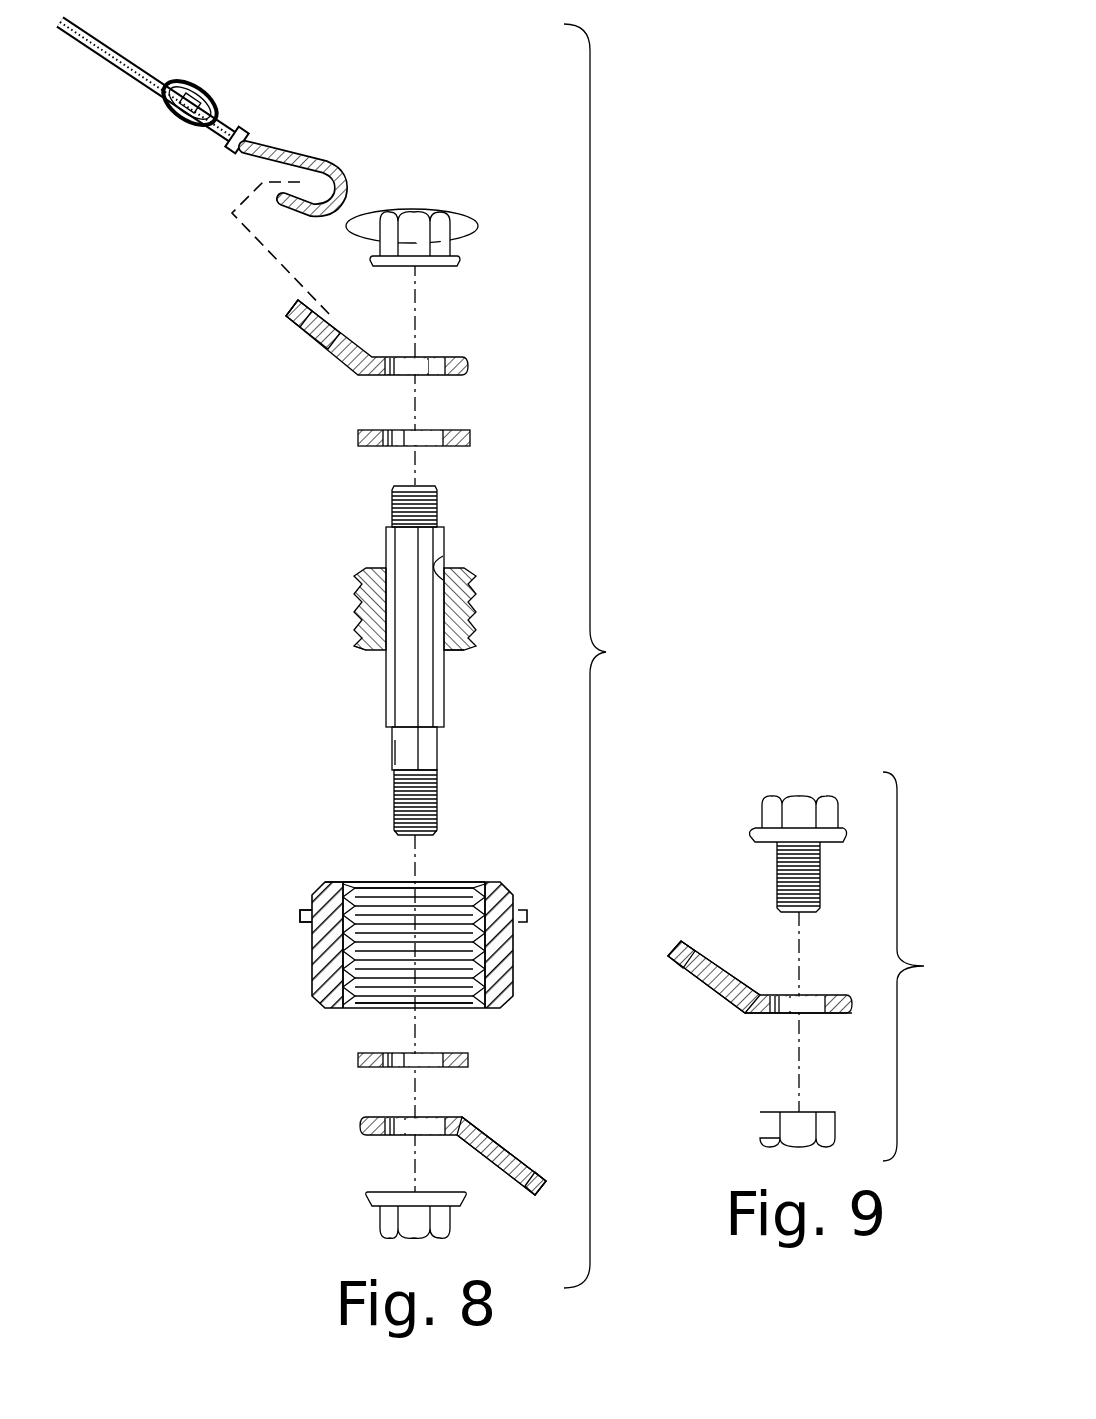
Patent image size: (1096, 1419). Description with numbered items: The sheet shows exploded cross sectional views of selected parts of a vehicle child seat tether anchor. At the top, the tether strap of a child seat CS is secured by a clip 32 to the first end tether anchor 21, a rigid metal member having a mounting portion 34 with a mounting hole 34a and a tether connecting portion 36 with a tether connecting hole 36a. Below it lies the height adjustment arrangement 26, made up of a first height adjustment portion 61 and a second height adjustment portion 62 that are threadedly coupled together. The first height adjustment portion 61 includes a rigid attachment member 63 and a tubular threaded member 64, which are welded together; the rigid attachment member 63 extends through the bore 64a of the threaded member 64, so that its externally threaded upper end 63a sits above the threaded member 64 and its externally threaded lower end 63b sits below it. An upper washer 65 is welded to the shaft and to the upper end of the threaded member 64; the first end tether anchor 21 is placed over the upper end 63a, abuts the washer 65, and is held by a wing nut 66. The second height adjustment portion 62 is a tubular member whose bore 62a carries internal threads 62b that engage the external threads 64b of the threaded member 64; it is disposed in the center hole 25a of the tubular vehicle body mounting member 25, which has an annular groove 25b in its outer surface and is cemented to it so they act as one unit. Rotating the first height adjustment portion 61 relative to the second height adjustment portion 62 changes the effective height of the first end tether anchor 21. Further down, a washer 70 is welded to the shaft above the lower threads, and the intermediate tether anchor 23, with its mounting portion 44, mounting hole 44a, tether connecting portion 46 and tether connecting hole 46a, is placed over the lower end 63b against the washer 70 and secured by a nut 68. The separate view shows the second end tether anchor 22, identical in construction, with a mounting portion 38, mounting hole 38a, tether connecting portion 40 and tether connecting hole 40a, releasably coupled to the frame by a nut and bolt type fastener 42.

In FIG. 8, the child seat CS is at (140, 62).
In FIG. 8, the clip 32 is at (320, 158).
In FIG. 8, the wing nut 66 is at (445, 212).
In FIG. 8, the mounting portion 34 is at (452, 357).
In FIG. 8, the mounting hole 34a is at (427, 370).
In FIG. 8, the tether connecting portion 36 is at (292, 318).
In FIG. 8, the tether connecting hole 36a is at (296, 360).
In FIG. 8, the first end tether anchor 21 is at (322, 363).
In FIG. 8, the upper washer 65 is at (358, 438).
In FIG. 8, the rigid attachment member 63 is at (444, 698).
In FIG. 8, the upper end 63a is at (437, 503).
In FIG. 8, the lower end 63b is at (437, 797).
In FIG. 8, the threaded member 64 is at (352, 590).
In FIG. 8, the bore 64a is at (443, 562).
In FIG. 8, the external threads 64b is at (478, 650).
In FIG. 8, the first height adjustment portion 61 is at (350, 650).
In FIG. 8, the height adjustment arrangement 26 is at (245, 690).
In FIG. 8, the vehicle body mounting member 25 is at (308, 953).
In FIG. 8, the center hole 25a is at (340, 885).
In FIG. 8, the annular groove 25b is at (302, 915).
In FIG. 8, the second height adjustment portion 62 is at (387, 876).
In FIG. 8, the bore 62a is at (444, 882).
In FIG. 8, the internal threads 62b is at (360, 995).
In FIG. 8, the washer 70 is at (358, 1058).
In FIG. 8, the mounting portion 44 is at (360, 1122).
In FIG. 8, the mounting hole 44a is at (400, 1133).
In FIG. 8, the tether connecting portion 46 is at (540, 1168).
In FIG. 8, the tether connecting hole 46a is at (508, 1172).
In FIG. 8, the intermediate tether anchor 23 is at (497, 1118).
In FIG. 8, the nut 68 is at (380, 1222).
In FIG. 9, the fastener 42 is at (775, 792).
In FIG. 9, the mounting portion 38 is at (852, 1013).
In FIG. 9, the mounting hole 38a is at (810, 1013).
In FIG. 9, the tether connecting portion 40 is at (708, 1000).
In FIG. 9, the tether connecting hole 40a is at (700, 960).
In FIG. 9, the second end tether anchor 22 is at (838, 990).